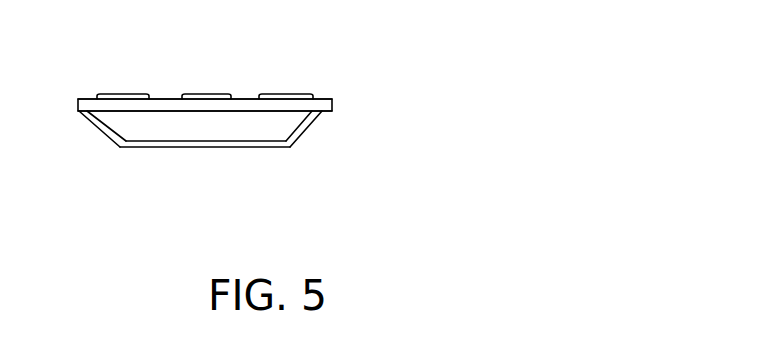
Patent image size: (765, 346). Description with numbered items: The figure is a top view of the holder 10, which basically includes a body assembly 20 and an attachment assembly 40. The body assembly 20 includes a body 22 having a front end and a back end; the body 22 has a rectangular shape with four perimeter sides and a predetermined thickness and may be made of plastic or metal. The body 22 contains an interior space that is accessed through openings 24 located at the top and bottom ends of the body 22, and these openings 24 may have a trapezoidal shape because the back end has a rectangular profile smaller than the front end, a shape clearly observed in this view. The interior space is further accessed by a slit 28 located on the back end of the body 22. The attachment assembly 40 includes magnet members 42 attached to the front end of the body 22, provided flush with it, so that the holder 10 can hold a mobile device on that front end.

The holder 10 is at (373, 37).
The body assembly 20 is at (331, 105).
The body 22 is at (302, 134).
The openings 24 is at (144, 122).
The slit 28 is at (250, 139).
The attachment assembly 40 is at (285, 93).
The magnet members 42 is at (193, 94).